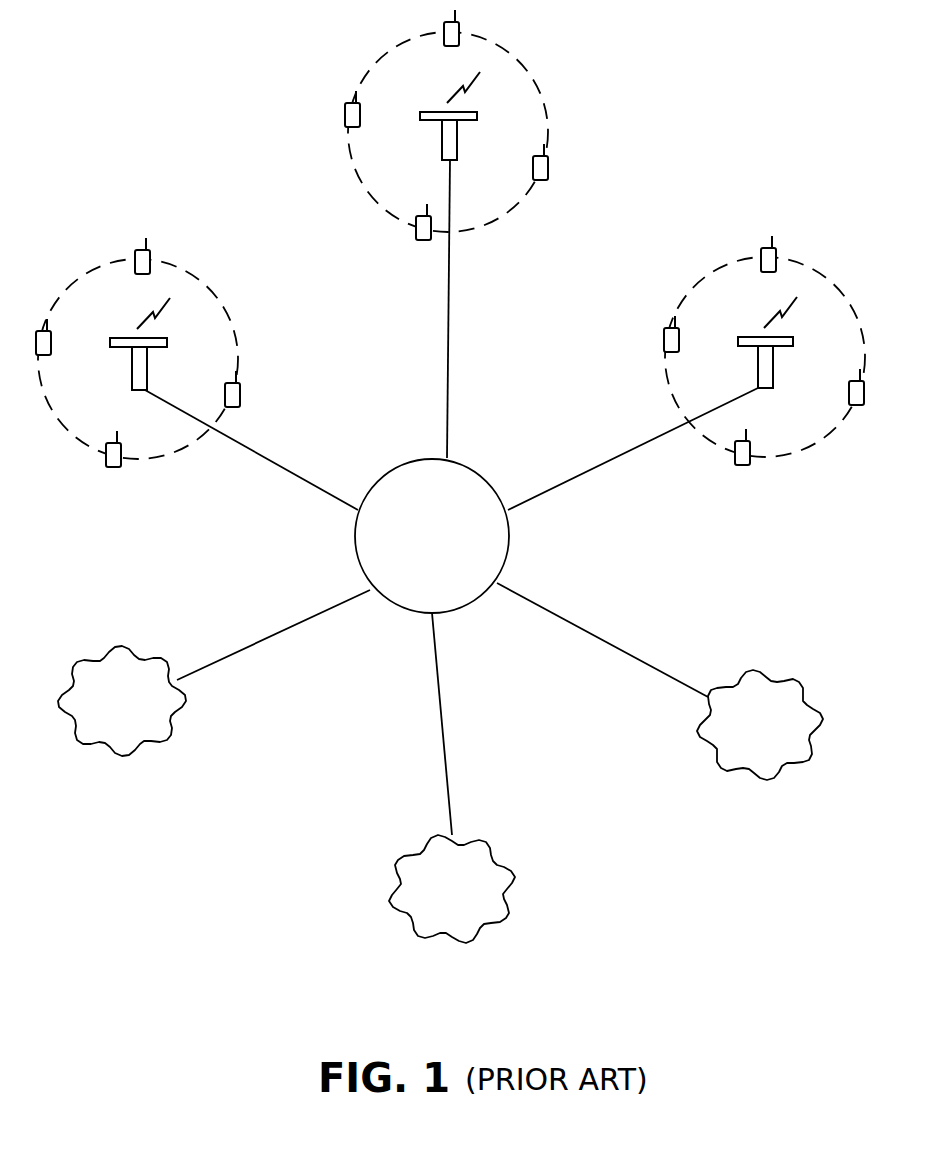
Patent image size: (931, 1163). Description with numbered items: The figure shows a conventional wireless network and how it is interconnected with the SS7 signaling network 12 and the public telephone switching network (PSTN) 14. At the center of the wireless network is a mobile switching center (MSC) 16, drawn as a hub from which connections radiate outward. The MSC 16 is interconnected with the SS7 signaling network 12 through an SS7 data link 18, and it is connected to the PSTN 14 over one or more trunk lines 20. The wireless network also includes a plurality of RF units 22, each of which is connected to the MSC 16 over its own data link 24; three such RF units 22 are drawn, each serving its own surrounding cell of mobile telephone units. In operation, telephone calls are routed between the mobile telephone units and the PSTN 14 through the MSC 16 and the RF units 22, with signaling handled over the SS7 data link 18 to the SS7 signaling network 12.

The SS7 signaling network 12 is at (155, 747).
The public telephone switching network (PSTN) 14 is at (737, 775).
The mobile switching center (MSC) 16 is at (392, 603).
The SS7 data link 18 is at (272, 635).
The trunk line 20 is at (582, 625).
The RF unit 22 is at (457, 140).
The data link 24 is at (448, 338).